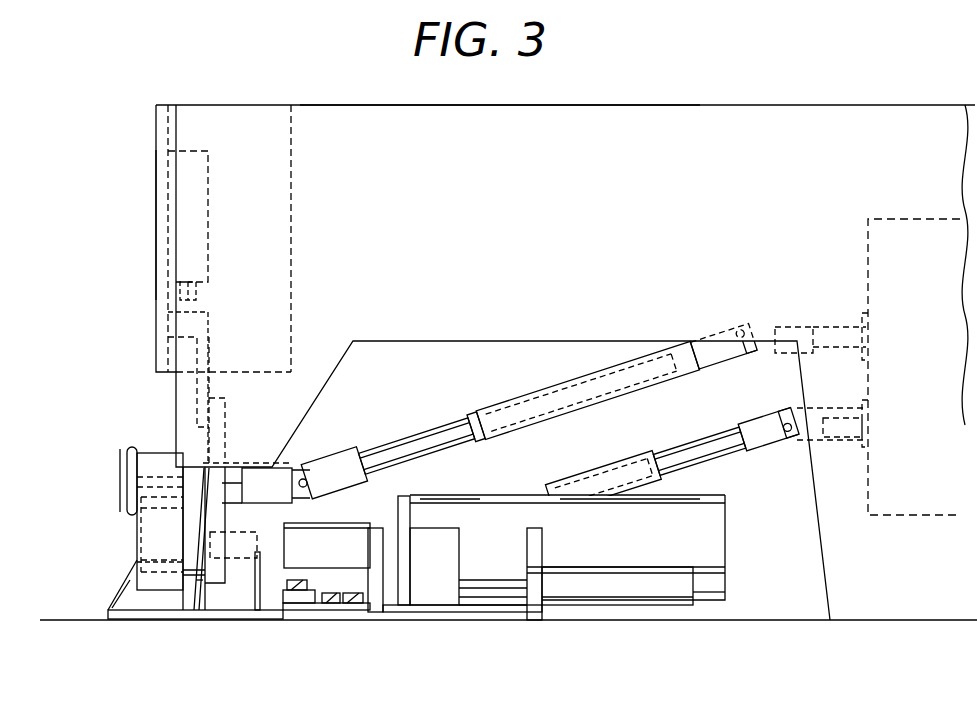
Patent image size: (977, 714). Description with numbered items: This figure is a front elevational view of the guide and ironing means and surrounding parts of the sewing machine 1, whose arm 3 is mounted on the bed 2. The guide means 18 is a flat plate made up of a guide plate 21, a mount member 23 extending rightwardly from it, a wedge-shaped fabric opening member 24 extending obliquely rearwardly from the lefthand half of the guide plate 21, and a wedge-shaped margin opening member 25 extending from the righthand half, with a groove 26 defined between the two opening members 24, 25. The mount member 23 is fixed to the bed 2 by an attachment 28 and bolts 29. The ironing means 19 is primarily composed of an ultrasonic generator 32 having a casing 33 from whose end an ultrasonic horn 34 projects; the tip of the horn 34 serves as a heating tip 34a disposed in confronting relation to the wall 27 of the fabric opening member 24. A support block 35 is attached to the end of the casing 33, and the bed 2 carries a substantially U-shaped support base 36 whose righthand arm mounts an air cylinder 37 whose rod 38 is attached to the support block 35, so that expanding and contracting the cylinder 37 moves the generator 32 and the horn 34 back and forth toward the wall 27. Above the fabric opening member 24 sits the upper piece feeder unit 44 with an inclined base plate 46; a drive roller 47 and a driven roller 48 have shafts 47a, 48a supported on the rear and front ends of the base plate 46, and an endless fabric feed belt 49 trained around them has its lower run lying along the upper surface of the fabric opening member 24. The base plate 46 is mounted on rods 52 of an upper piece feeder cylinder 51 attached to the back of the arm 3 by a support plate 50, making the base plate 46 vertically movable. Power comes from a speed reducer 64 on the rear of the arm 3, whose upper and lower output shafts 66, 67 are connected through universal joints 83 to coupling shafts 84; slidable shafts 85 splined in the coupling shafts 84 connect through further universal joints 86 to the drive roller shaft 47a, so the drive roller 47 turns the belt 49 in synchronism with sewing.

The sewing machine 1 is at (667, 100).
The bed 2 is at (775, 620).
The arm 3 is at (345, 110).
The guide means 18 is at (104, 589).
The ironing means 19 is at (501, 490).
The guide plate 21 is at (158, 620).
The mount member 23 is at (292, 602).
The wedge-shaped fabric opening member 24 is at (132, 602).
The wedge-shaped margin opening member 25 is at (253, 600).
The groove 26 is at (228, 590).
The wall 27 is at (205, 602).
The attachment 28 is at (350, 606).
The bolts 29 is at (297, 588).
The ultrasonic generator 32 is at (626, 547).
The casing 33 is at (716, 551).
The ultrasonic horn 34 is at (258, 597).
The heating tip 34a is at (192, 548).
The support block 35 is at (440, 528).
The support base 36 is at (485, 613).
The air cylinder 37 is at (612, 610).
The rod 38 is at (495, 580).
The upper piece feeder unit 44 is at (116, 444).
The inclined base plate 46 is at (226, 437).
The drive roller 47 is at (126, 470).
The shaft 47a is at (196, 468).
The driven roller 48 is at (136, 566).
The shaft 48a is at (196, 592).
The fabric feed belt 49 is at (150, 453).
The support plate 50 is at (156, 252).
The upper piece feeder cylinder 51 is at (213, 198).
The rods 52 is at (198, 300).
The speed reducer 64 is at (912, 212).
The upper output shaft 66 is at (835, 328).
The lower output shaft 67 is at (838, 441).
The universal joints 83 is at (746, 360).
The coupling shafts 84 is at (604, 390).
The slidable shafts 85 is at (432, 420).
The universal joints 86 is at (302, 462).